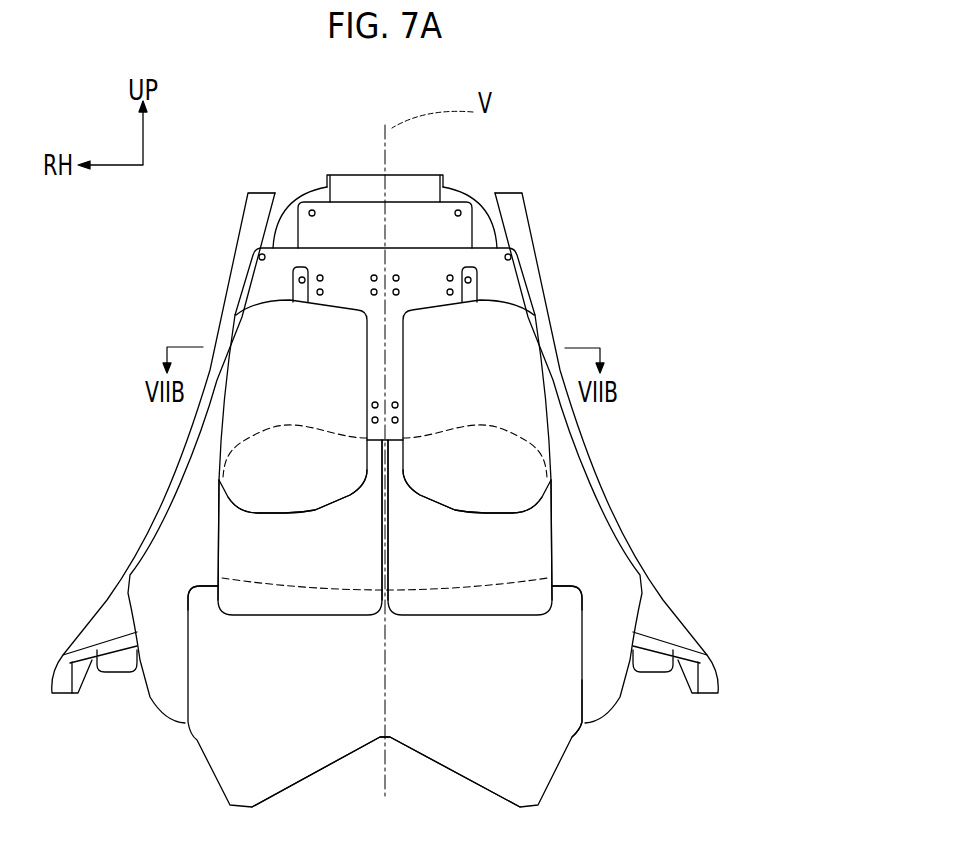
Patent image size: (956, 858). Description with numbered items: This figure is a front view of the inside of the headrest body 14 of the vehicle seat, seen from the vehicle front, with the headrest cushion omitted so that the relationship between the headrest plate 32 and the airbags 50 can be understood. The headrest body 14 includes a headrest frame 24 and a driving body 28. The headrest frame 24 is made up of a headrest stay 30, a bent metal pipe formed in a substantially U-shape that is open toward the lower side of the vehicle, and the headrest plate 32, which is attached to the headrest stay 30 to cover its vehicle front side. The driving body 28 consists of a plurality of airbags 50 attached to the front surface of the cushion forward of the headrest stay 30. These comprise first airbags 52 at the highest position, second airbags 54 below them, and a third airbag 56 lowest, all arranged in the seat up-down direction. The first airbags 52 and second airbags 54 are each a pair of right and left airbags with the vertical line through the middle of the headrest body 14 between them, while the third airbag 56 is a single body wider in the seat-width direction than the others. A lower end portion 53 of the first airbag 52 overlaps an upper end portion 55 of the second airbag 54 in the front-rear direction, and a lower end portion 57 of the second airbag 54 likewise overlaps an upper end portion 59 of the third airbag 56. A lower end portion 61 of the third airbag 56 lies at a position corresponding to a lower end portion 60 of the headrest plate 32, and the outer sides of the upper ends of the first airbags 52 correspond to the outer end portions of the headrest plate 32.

The headrest body 14 is at (612, 353).
The headrest frame 24 is at (554, 313).
The driving body 28 is at (556, 448).
The headrest stay 30 is at (485, 236).
The headrest plate 32 is at (583, 512).
The airbags 50 is at (385, 553).
The first airbags 52 is at (425, 378).
The lower end portion of the first airbag 53 is at (445, 497).
The second airbags 54 is at (420, 562).
The upper end portion of the second airbag 55 is at (440, 435).
The third airbag 56 is at (410, 697).
The lower end portion of the second airbag 57 is at (260, 605).
The upper end portion of the third airbag 59 is at (563, 597).
The lower end portion of the headrest plate 60 is at (598, 705).
The lower end portion of the third airbag 61 is at (508, 782).